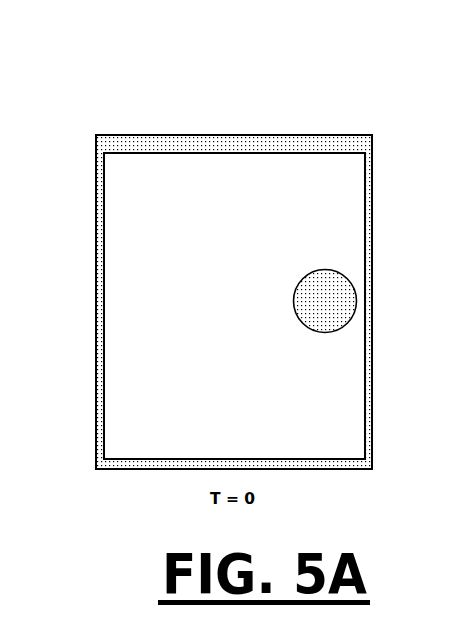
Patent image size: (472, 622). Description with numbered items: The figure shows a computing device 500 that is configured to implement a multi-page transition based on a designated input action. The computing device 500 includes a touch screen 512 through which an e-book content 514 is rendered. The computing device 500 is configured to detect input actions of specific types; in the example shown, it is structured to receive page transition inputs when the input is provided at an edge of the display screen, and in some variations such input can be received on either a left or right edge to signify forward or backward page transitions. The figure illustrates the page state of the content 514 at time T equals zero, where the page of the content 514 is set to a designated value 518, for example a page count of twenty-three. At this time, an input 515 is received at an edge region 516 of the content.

The computing device 500 is at (112, 107).
The touch screen 512 is at (127, 305).
The e-book content 514 is at (152, 213).
The input 515 is at (338, 288).
The edge region 516 is at (332, 380).
The designated value 518 is at (218, 427).